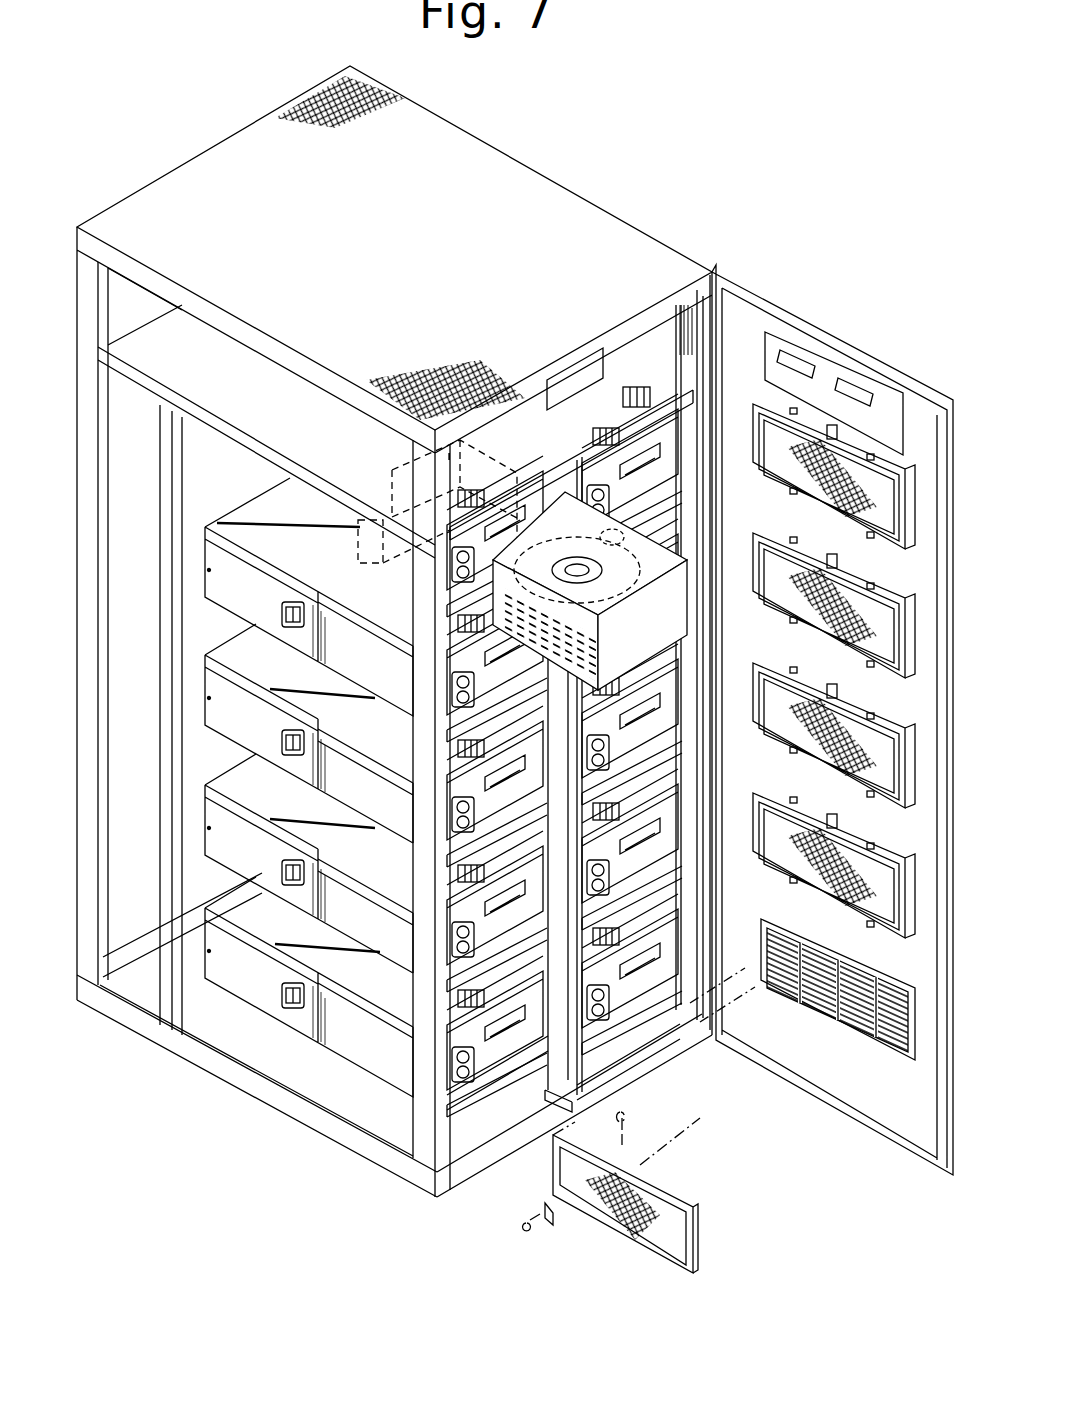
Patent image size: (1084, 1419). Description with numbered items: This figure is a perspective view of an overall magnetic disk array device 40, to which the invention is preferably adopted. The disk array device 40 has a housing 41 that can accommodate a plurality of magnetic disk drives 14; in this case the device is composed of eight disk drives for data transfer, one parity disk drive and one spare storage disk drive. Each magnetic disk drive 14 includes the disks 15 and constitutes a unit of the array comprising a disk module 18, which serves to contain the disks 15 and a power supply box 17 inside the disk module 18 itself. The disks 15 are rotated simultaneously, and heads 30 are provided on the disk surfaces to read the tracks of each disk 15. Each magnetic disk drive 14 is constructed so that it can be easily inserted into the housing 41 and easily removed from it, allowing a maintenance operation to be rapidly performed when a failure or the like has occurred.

The housing 41 is at (143, 187).
The disk array device 40 is at (694, 187).
The magnetic disk drive 14 is at (569, 560).
The disk 15 is at (553, 555).
The head 30 is at (575, 456).
The power supply box 17 is at (360, 557).
The disk module 18 is at (470, 608).